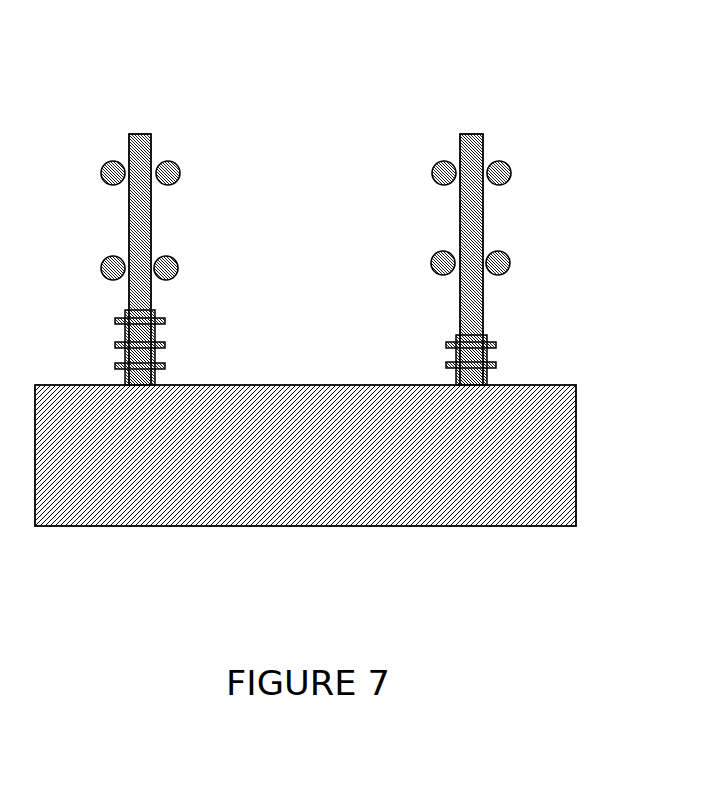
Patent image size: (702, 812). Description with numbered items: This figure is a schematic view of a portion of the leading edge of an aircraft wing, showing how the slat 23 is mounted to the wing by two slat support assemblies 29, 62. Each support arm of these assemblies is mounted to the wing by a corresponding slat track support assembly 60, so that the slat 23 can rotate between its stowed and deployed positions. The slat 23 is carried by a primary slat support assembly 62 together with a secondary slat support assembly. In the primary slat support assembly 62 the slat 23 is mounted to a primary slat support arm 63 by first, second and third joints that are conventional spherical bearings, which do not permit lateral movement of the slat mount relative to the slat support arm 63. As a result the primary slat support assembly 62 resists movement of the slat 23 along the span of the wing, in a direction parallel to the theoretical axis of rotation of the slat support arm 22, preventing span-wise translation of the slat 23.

The slat support assembly 29 is at (136, 205).
The primary slat support assembly 62 is at (498, 204).
The slat support arm 22 is at (121, 216).
The primary slat support arm 63 is at (475, 208).
The slat track support assembly 60 is at (172, 170).
The slat 23 is at (556, 460).